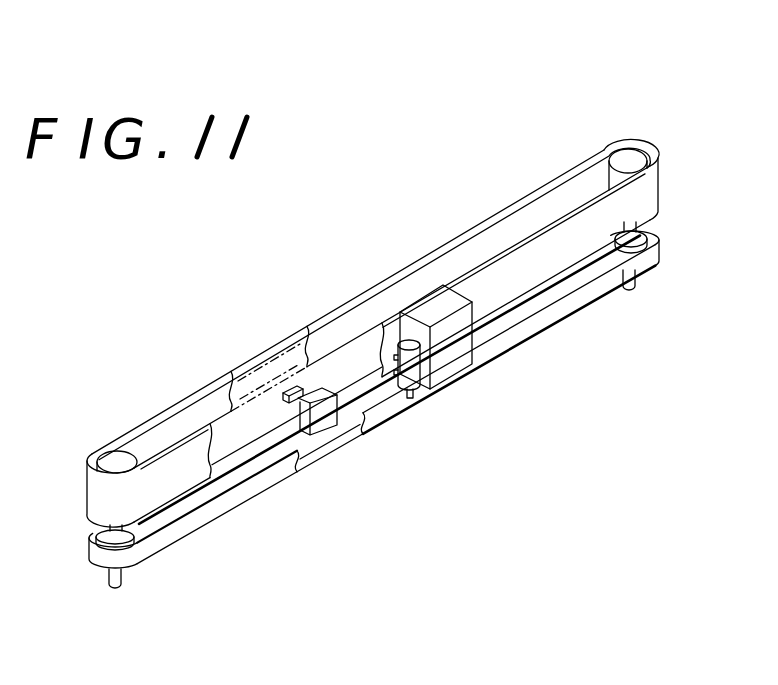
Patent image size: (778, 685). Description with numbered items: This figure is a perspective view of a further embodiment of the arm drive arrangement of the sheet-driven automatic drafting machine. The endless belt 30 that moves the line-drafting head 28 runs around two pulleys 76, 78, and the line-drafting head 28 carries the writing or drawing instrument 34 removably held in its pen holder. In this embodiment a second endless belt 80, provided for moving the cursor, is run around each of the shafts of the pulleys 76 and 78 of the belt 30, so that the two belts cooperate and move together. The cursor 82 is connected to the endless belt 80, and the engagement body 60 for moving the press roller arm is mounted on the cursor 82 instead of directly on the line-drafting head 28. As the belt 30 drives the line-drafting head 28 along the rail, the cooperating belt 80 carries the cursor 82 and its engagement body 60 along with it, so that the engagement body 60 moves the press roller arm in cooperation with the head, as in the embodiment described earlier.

The line-drafting head 28 is at (453, 358).
The endless belt 30 is at (493, 237).
The writing or drawing instrument 34 is at (420, 378).
The engagement body 60 is at (291, 386).
The pulley 76 is at (111, 457).
The pulley 78 is at (628, 154).
The endless belt 80 is at (157, 548).
The cursor 82 is at (322, 414).